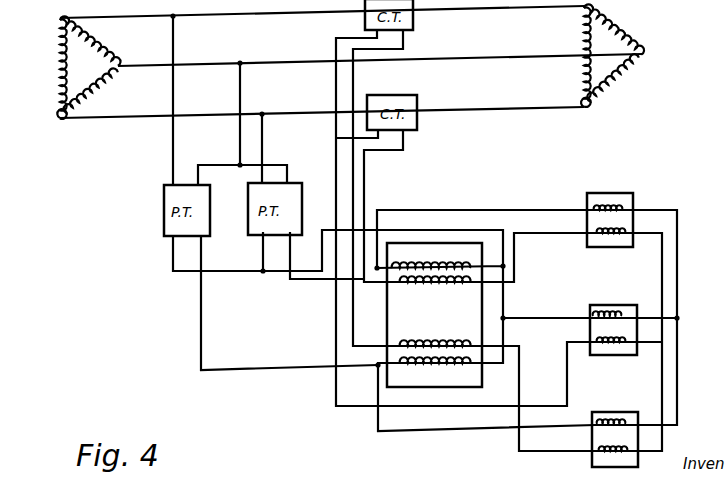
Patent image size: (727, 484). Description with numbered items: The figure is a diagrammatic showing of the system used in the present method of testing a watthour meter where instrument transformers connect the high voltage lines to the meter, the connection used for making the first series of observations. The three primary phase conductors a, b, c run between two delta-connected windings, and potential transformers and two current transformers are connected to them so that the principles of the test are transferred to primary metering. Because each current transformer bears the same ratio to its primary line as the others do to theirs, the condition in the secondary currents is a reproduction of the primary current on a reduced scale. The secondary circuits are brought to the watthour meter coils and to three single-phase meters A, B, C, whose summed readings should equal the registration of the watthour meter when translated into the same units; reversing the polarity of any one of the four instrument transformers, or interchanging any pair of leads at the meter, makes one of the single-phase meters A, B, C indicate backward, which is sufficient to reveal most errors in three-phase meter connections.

The phase conductor a is at (322, 9).
The phase conductor b is at (380, 54).
The phase conductor c is at (322, 107).
The relay A is at (634, 197).
The relay B is at (628, 326).
The relay C is at (637, 420).